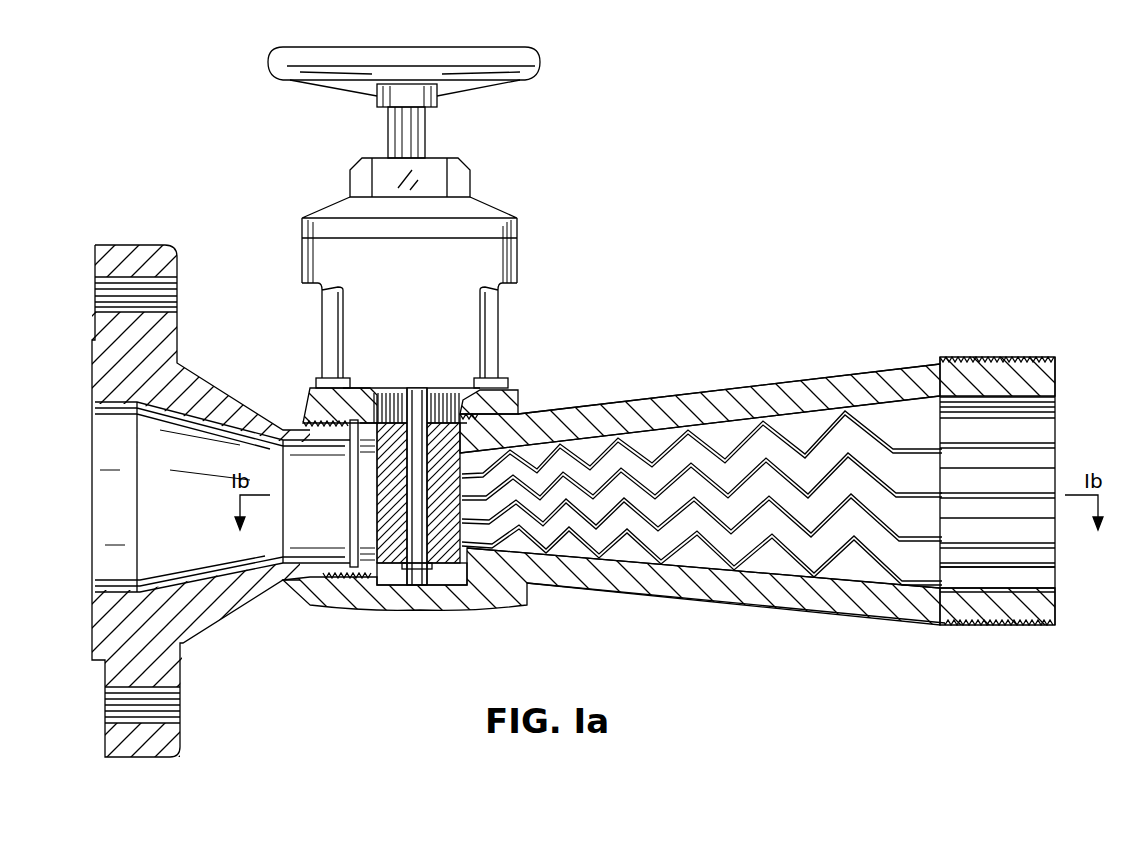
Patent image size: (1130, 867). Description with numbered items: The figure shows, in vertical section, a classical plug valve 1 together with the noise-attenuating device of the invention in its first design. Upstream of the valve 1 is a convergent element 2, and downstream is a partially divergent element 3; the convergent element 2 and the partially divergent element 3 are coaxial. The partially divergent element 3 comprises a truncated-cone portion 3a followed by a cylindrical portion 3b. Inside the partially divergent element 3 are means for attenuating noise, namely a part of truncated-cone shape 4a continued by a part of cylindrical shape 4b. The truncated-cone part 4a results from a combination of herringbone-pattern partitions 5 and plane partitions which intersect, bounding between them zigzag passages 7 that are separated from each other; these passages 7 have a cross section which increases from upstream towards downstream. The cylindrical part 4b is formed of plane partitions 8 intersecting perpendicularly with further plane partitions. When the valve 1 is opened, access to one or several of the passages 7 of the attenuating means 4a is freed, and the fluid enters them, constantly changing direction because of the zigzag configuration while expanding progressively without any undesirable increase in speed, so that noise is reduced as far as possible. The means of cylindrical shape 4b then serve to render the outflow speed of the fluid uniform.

The plug valve 1 is at (520, 362).
The convergent element 2 is at (228, 396).
The partially divergent element 3 is at (757, 440).
The truncated-cone portion 3a is at (896, 368).
The cylindrical portion 3b is at (997, 470).
The noise attenuating means of truncated-cone shape 4a is at (852, 570).
The means of cylindrical shape 4b is at (973, 578).
The herringbone-pattern partitions 5 is at (673, 560).
The zigzag passages 7 is at (754, 535).
The plane partitions 8 is at (1040, 566).